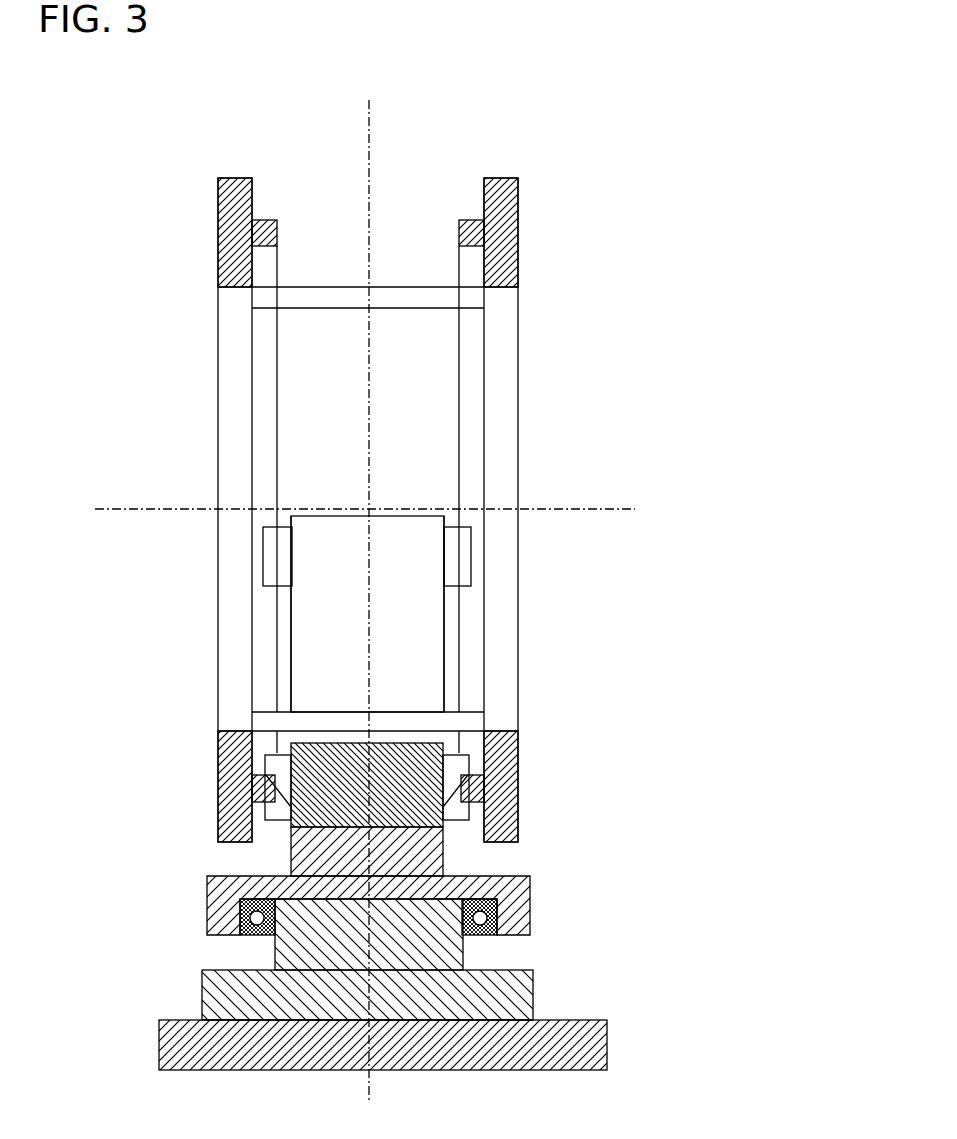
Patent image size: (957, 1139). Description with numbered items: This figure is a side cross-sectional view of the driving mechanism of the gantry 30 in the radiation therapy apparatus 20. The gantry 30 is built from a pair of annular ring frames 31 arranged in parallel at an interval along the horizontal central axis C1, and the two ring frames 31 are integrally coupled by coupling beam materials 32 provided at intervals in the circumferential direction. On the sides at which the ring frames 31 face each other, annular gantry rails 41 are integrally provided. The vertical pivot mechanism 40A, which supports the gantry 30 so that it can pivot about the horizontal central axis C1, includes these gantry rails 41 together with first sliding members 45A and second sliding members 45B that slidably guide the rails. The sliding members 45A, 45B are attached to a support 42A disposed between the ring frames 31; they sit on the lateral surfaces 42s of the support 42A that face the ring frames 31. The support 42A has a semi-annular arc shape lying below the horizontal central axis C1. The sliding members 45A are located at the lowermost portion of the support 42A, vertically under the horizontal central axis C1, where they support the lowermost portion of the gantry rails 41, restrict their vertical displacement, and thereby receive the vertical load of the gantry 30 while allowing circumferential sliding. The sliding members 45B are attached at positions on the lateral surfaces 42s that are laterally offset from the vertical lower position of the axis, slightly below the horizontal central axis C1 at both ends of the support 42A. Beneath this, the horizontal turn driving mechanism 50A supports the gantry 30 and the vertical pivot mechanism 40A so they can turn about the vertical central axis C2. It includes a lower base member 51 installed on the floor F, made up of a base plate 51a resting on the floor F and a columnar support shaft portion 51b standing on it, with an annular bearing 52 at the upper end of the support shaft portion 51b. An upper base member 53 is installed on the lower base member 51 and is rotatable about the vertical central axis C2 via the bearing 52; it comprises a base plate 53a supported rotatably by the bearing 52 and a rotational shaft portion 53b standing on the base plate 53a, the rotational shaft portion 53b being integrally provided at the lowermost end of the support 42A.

The radiation therapy apparatus 20 is at (632, 225).
The gantry 30 is at (217, 248).
The ring frame 31 is at (237, 178).
The coupling beam material 32 is at (342, 287).
The gantry rail 41 is at (278, 222).
The vertical pivot mechanism 40A is at (645, 799).
The support 42A is at (291, 647).
The lateral surface 42s is at (290, 613).
The sliding member 45A is at (252, 733).
The sliding member 45B is at (270, 543).
The upper base member 53 is at (445, 855).
The base plate 53a is at (208, 895).
The rotational shaft portion 53b is at (291, 860).
The horizontal turn driving mechanism 50A is at (645, 953).
The bearing 52 is at (500, 945).
The lower base member 51 is at (535, 995).
The base plate 51a is at (535, 1012).
The support shaft portion 51b is at (465, 963).
The floor F is at (187, 1020).
The horizontal central axis C1 is at (604, 509).
The vertical central axis C2 is at (369, 147).